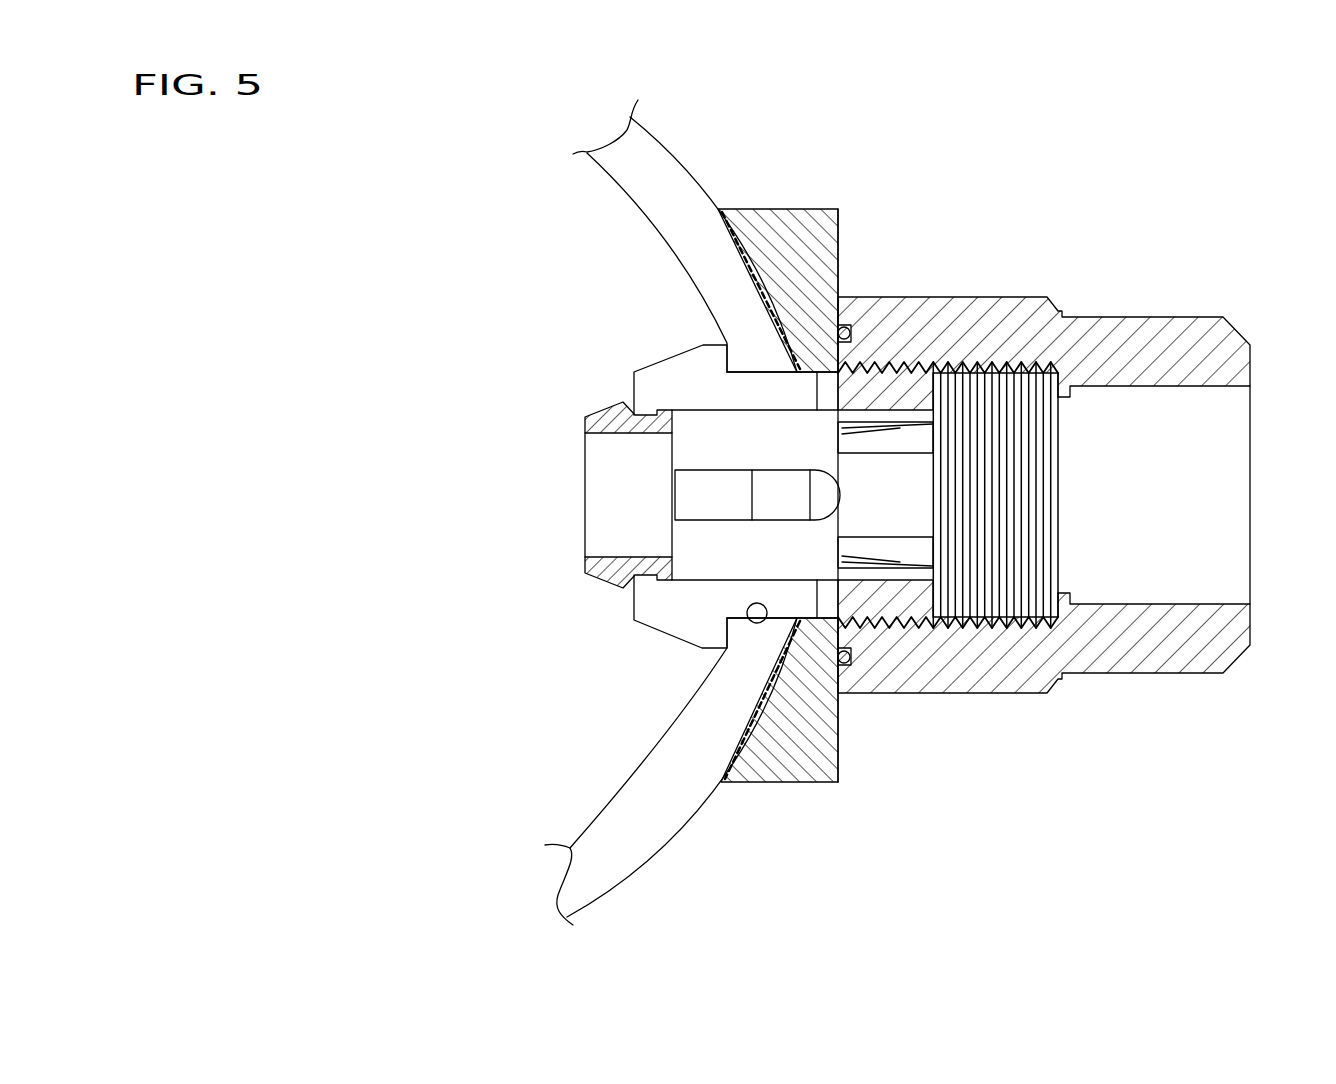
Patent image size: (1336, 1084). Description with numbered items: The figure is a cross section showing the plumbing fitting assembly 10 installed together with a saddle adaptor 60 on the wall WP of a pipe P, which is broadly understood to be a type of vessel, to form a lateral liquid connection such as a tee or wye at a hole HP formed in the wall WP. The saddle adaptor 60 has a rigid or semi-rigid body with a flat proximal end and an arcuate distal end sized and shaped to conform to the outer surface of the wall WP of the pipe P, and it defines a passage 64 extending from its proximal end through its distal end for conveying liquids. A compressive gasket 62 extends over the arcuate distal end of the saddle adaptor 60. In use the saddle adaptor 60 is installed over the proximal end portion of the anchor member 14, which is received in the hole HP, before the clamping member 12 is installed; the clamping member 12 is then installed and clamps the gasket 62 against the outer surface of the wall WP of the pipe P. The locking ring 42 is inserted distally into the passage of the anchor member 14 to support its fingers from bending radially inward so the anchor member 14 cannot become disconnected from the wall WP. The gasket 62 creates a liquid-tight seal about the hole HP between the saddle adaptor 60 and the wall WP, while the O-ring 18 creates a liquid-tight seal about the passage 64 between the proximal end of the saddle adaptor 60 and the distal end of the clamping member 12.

The plumbing fitting assembly 10 is at (1186, 826).
The clamping member 12 is at (1018, 697).
The anchor member 14 is at (646, 627).
The O-ring 18 is at (846, 325).
The locking ring 42 is at (591, 576).
The saddle adaptor 60 is at (798, 209).
The compressive gasket 62 is at (745, 242).
The passage 64 is at (803, 373).
The pipe P is at (648, 890).
The wall of the pipe WP is at (648, 197).
The hole HP is at (767, 625).